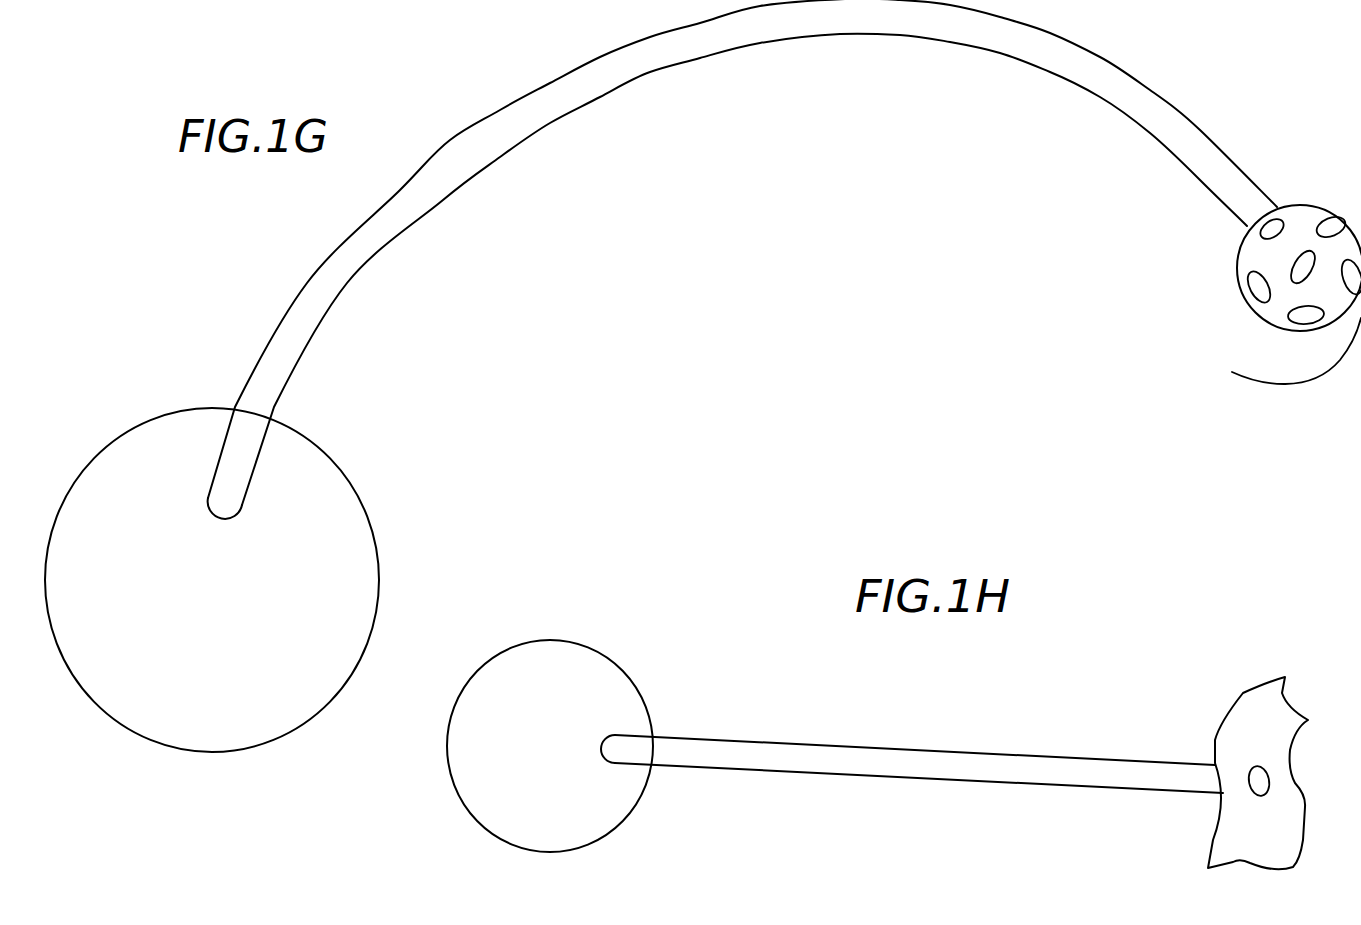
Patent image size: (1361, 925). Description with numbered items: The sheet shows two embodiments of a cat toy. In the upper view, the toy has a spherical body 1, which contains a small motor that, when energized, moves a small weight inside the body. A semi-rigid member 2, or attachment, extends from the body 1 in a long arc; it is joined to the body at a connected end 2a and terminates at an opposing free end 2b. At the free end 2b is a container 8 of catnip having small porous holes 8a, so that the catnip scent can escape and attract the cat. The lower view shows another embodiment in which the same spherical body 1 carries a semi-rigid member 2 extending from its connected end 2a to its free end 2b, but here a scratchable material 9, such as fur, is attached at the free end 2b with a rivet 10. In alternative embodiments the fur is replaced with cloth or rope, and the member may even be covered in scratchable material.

In FIG. 1G, the spherical body 1 is at (220, 712).
In FIG. 1H, the spherical body 1 is at (552, 660).
In FIG. 1G, the semi-rigid member 2 is at (684, 47).
In FIG. 1H, the semi-rigid member 2 is at (890, 748).
In FIG. 1G, the connected end 2a is at (227, 498).
In FIG. 1H, the connected end 2a is at (615, 737).
In FIG. 1G, the free end 2b is at (1264, 212).
In FIG. 1H, the free end 2b is at (1203, 773).
In FIG. 1G, the container of catnip 8 is at (1247, 298).
In FIG. 1G, the porous holes 8a is at (1300, 270).
In FIG. 1H, the scratchable material 9 is at (1255, 703).
In FIG. 1H, the rivet 10 is at (1262, 787).